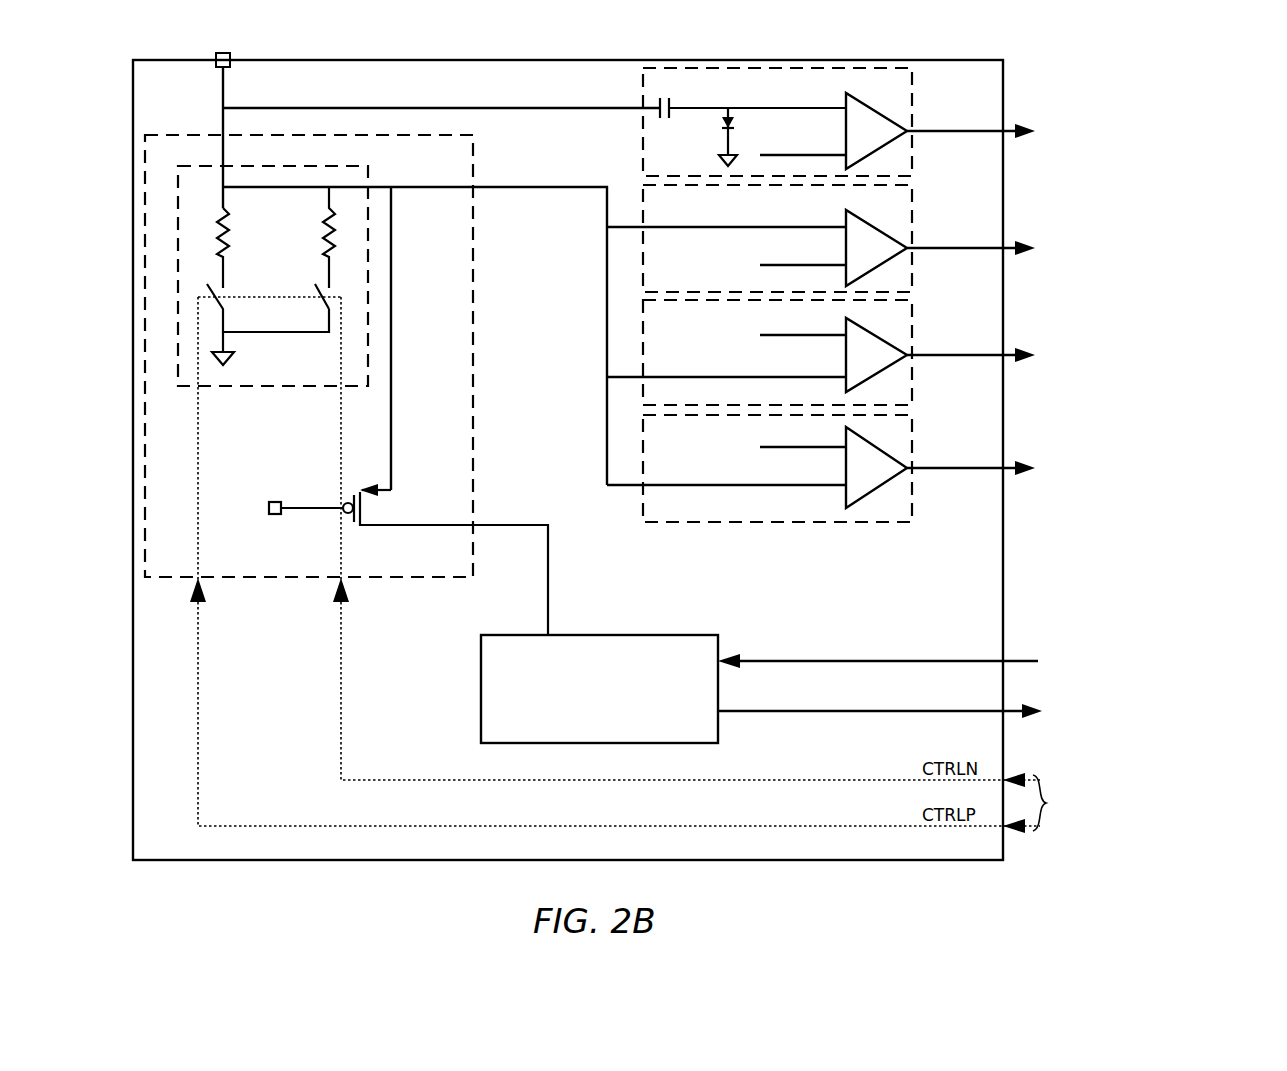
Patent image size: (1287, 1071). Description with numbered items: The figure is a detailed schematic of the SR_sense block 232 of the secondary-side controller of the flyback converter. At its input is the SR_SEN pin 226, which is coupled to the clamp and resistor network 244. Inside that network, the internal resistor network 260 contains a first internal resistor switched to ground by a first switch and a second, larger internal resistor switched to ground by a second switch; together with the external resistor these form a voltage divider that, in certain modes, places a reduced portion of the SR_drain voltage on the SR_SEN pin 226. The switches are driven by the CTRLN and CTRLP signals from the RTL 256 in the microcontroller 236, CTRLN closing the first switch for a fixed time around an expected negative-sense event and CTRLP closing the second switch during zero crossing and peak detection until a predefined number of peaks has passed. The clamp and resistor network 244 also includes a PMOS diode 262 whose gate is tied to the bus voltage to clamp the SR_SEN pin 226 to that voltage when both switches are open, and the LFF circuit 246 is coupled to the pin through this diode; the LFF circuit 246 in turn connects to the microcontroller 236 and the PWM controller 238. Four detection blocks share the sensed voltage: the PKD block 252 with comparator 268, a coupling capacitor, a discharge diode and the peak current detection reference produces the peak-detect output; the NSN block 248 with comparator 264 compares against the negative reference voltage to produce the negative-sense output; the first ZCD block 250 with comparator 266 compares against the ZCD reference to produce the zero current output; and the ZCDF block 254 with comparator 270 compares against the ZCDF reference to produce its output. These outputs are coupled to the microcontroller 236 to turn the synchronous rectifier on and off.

The SR_SEN pin 226 is at (221, 53).
The SR_sense block 232 is at (568, 460).
The clamp and resistor network 244 is at (309, 356).
The internal resistor network 260 is at (273, 276).
The PMOS diode 262 is at (386, 508).
The LFF circuit 246 is at (599, 689).
The microcontroller 236 is at (950, 660).
The PWM controller 238 is at (971, 712).
The RTL 256 is at (1075, 803).
The PKD block 252 is at (777, 122).
The comparator 268 is at (880, 106).
The NSN block 248 is at (839, 238).
The comparator 264 is at (887, 222).
The first ZCD block 250 is at (839, 352).
The comparator 266 is at (887, 334).
The ZCDF block 254 is at (839, 468).
The comparator 270 is at (887, 449).